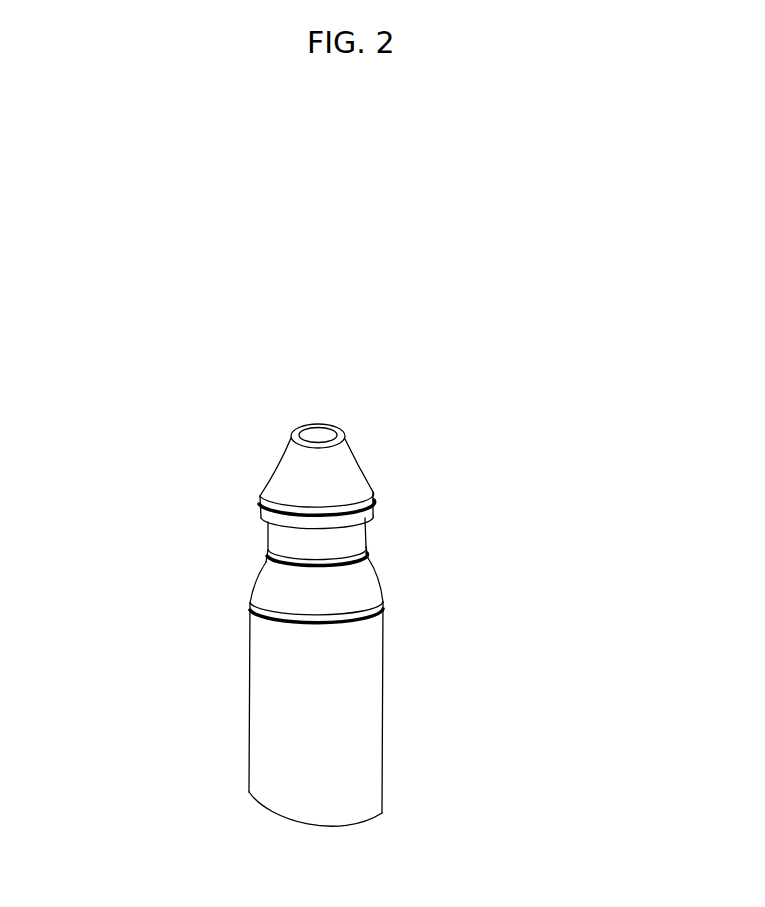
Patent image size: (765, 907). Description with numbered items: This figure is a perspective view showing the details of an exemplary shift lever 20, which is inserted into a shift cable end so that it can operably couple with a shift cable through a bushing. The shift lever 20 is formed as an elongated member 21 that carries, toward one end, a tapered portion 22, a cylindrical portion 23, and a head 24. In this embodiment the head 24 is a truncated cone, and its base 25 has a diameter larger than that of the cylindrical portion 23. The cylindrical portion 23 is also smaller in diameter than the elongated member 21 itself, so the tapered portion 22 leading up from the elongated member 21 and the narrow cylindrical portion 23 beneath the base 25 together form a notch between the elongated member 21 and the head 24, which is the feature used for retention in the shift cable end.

The shift lever 20 is at (427, 690).
The elongated member 21 is at (262, 702).
The tapered portion 22 is at (265, 592).
The cylindrical portion 23 is at (333, 547).
The head 24 is at (290, 467).
The base 25 is at (365, 523).